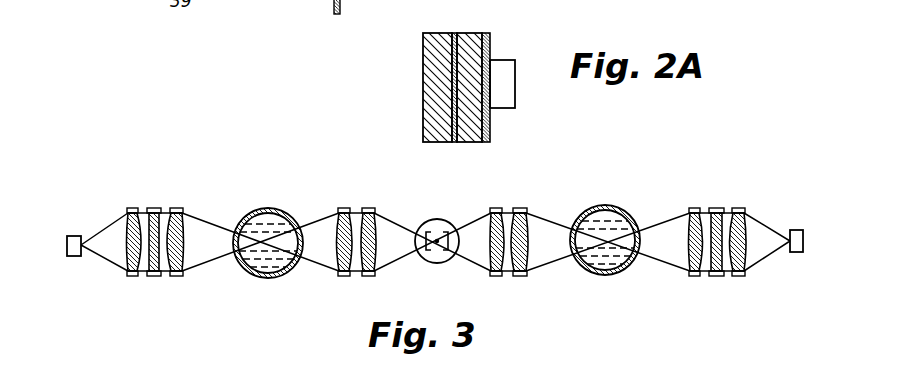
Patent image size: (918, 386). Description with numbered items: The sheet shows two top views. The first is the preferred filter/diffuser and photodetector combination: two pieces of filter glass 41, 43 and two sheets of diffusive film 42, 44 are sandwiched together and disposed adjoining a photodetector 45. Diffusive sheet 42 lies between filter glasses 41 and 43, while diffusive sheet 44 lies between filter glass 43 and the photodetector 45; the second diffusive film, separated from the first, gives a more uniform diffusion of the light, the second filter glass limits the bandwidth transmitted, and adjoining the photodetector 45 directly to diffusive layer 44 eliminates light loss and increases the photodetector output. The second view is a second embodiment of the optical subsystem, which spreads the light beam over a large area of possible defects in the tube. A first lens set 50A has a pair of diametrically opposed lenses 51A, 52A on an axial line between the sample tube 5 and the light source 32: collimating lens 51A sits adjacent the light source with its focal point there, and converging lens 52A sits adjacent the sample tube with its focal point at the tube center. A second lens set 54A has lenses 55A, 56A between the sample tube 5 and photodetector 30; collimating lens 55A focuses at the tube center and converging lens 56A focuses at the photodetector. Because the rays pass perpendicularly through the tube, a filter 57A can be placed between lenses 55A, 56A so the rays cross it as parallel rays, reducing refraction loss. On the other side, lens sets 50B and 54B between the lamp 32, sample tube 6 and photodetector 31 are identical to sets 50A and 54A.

In FIG. 2A, the filter glass 41 is at (441, 33).
In FIG. 2A, the diffusive film 42 is at (455, 142).
In FIG. 2A, the filter glass 43 is at (473, 33).
In FIG. 2A, the diffusive film 44 is at (488, 142).
In FIG. 2A, the photodetector 45 is at (492, 61).
In FIG. 3, the photodetector 30 is at (69, 236).
In FIG. 3, the photodetector 31 is at (795, 230).
In FIG. 3, the sample tube 5 is at (268, 208).
In FIG. 3, the sample tube 6 is at (604, 205).
In FIG. 3, the light source 32 is at (437, 219).
In FIG. 3, the first lens set 50A is at (358, 204).
In FIG. 3, the collimating lens 51A is at (371, 209).
In FIG. 3, the converging lens 52A is at (342, 209).
In FIG. 3, the first lens set 50B is at (523, 198).
In FIG. 3, the second lens set 54A is at (160, 237).
In FIG. 3, the collimating lens 55A is at (182, 209).
In FIG. 3, the converging lens 56A is at (129, 209).
In FIG. 3, the filter 57A is at (154, 277).
In FIG. 3, the second lens set 54B is at (713, 186).